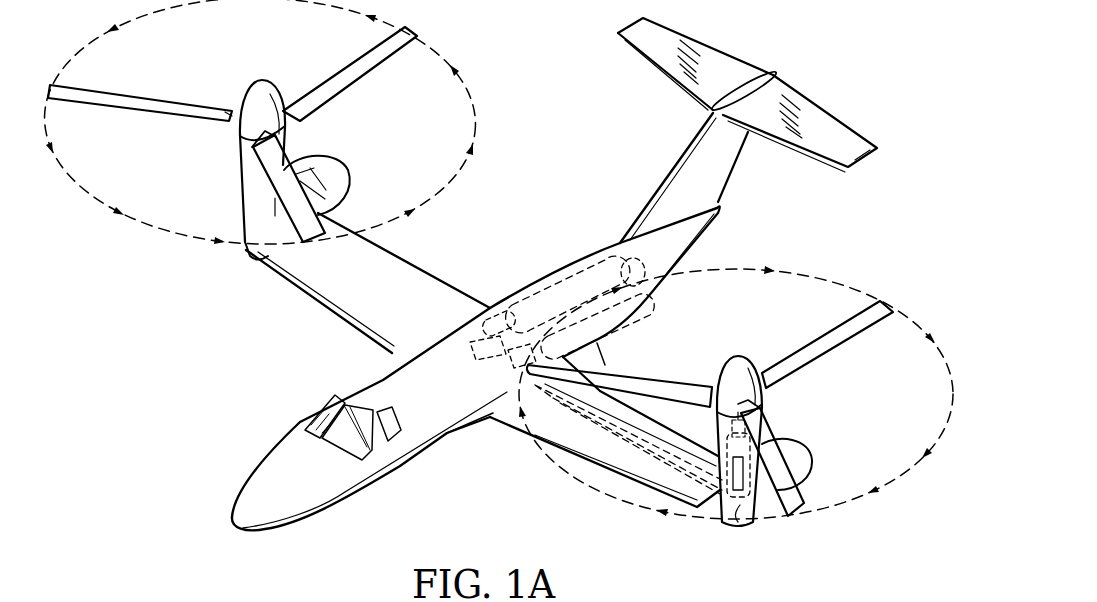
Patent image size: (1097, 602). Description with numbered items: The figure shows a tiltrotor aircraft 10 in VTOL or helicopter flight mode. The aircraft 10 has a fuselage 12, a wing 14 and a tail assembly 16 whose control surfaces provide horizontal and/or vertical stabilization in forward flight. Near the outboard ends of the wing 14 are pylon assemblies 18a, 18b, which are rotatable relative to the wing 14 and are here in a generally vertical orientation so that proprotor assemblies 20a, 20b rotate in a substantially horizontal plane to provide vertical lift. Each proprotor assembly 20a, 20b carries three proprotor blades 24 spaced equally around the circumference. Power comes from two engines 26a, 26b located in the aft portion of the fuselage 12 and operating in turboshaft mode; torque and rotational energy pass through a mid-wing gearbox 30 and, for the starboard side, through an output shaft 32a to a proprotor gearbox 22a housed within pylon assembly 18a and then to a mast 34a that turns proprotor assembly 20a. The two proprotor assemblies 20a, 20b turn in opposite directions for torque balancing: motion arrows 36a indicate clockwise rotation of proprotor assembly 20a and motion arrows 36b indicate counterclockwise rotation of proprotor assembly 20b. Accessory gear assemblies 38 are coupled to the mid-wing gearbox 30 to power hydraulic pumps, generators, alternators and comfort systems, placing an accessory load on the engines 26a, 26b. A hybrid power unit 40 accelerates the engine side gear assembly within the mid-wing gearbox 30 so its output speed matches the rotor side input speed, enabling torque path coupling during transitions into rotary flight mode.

The tiltrotor aircraft 10 is at (848, 86).
The fuselage 12 is at (320, 490).
The wing 14 is at (352, 306).
The tail assembly 16 is at (725, 65).
The pylon assembly 18a is at (745, 528).
The pylon assembly 18b is at (238, 173).
The proprotor assembly 20a is at (851, 340).
The proprotor assembly 20b is at (188, 100).
The proprotor gearbox 22a is at (770, 528).
The proprotor blades 24 is at (338, 78).
The engine 26a is at (640, 312).
The engine 26b is at (562, 268).
The mid-wing gearbox 30 is at (500, 318).
The output shaft 32a is at (615, 480).
The mast 34a is at (762, 416).
The motion arrows 36a is at (820, 280).
The motion arrows 36b is at (478, 104).
The accessory gear assemblies 38 is at (474, 356).
The hybrid power unit 40 is at (510, 368).